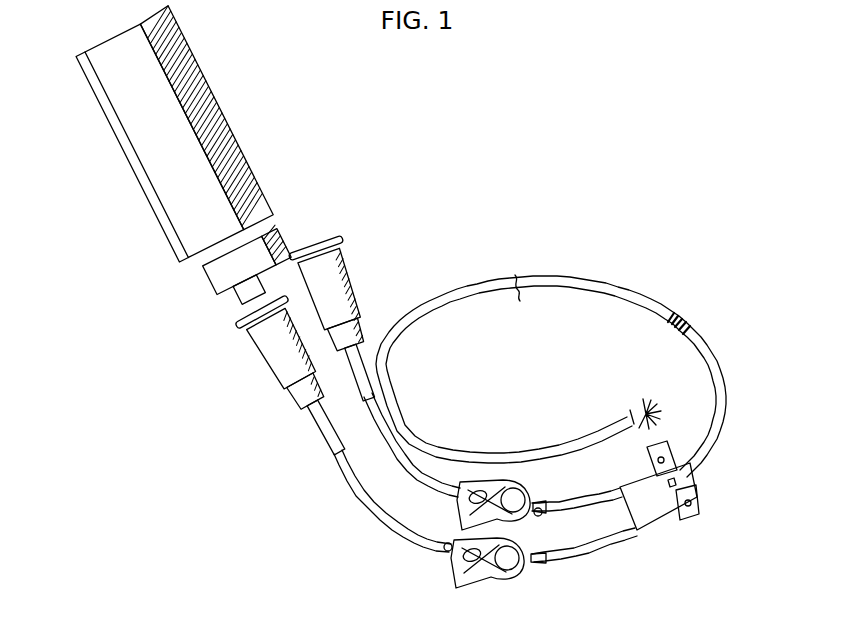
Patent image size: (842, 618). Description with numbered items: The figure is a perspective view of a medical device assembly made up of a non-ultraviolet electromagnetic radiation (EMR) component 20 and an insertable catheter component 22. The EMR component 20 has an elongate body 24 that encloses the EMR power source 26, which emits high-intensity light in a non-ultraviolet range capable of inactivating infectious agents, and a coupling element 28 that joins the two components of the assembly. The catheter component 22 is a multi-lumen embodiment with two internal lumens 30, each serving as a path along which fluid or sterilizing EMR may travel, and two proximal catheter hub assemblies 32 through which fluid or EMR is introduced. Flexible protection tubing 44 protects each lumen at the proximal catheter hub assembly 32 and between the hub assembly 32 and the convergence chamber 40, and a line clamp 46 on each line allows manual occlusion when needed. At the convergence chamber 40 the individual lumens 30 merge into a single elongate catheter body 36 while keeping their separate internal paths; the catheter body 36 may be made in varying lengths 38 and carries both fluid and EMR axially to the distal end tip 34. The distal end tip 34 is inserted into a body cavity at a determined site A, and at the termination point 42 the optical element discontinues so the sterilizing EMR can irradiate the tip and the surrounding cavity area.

The non-ultraviolet electromagnetic radiation (EMR) component 20 is at (307, 223).
The insertable catheter component 22 is at (397, 197).
The elongate body 24 is at (168, 237).
The EMR power source 26 is at (120, 143).
The coupling element 28 is at (218, 312).
The internal lumen 30 is at (363, 506).
The proximal catheter hub assembly 32 is at (270, 398).
The distal end tip 34 is at (593, 410).
The elongate catheter body 36 is at (717, 445).
The varying lengths 38 is at (518, 291).
The convergence chamber 40 is at (655, 522).
The termination point 42 is at (628, 432).
The flexible protection tubing 44 is at (318, 415).
The line clamp 46 is at (515, 485).
The determined site A is at (676, 330).